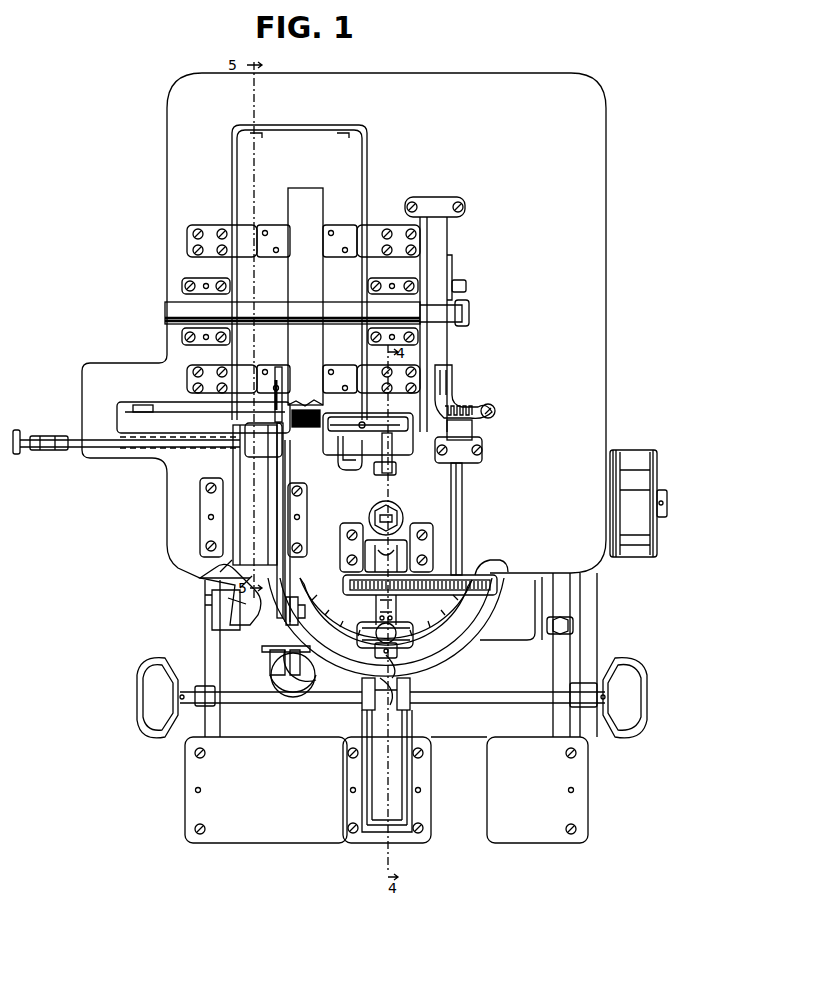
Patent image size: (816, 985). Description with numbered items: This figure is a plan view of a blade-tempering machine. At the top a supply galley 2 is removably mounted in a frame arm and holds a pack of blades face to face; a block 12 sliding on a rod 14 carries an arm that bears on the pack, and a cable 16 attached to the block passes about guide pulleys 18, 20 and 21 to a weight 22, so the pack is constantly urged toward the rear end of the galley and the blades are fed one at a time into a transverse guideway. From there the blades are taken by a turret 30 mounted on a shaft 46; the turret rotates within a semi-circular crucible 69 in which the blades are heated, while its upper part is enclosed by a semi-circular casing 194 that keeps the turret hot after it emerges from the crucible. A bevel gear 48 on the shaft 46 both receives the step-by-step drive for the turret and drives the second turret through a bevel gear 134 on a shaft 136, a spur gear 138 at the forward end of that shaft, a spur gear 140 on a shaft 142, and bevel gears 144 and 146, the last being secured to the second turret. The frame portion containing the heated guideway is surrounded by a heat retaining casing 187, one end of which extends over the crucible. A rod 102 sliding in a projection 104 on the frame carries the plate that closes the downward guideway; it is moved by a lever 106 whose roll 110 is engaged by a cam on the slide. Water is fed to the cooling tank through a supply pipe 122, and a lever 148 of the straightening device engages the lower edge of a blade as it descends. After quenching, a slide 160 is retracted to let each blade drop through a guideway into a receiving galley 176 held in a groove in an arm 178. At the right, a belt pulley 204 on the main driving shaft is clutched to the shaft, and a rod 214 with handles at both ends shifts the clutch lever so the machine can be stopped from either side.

The supply galley 2 is at (258, 513).
The block 12 is at (258, 460).
The rod 14 is at (280, 533).
The cable 16 is at (288, 565).
The guide pulley 18 is at (277, 368).
The guide pulley 20 is at (292, 618).
The guide pulley 21 is at (272, 662).
The weight 22 is at (275, 684).
The turret 30 is at (303, 428).
The shaft 46 is at (265, 305).
The bevel gear 48 is at (448, 385).
The crucible 69 is at (355, 155).
The rod 102 is at (392, 462).
The projection 104 is at (386, 474).
The lever 106 is at (345, 470).
The roll 110 is at (374, 470).
The supply pipe 122 is at (228, 596).
The bevel gear 134 is at (462, 402).
The shaft 136 is at (462, 488).
The spur gear 138 is at (492, 575).
The spur gear 140 is at (358, 595).
The shaft 142 is at (420, 678).
The bevel gear 144 is at (414, 637).
The bevel gear 146 is at (450, 605).
The lever 148 is at (390, 507).
The slide 160 is at (412, 703).
The receiving galley 176 is at (393, 775).
The arm 178 is at (410, 800).
The heat retaining casing 187 is at (480, 438).
The semi-circular casing 194 is at (325, 197).
The belt pulley 204 is at (630, 450).
The rod 214 is at (502, 690).